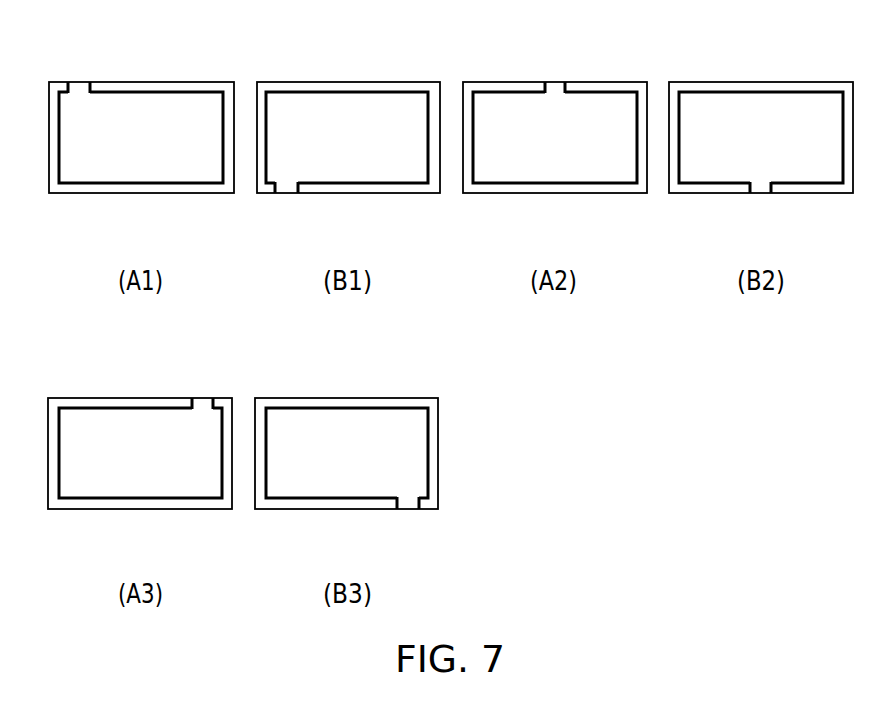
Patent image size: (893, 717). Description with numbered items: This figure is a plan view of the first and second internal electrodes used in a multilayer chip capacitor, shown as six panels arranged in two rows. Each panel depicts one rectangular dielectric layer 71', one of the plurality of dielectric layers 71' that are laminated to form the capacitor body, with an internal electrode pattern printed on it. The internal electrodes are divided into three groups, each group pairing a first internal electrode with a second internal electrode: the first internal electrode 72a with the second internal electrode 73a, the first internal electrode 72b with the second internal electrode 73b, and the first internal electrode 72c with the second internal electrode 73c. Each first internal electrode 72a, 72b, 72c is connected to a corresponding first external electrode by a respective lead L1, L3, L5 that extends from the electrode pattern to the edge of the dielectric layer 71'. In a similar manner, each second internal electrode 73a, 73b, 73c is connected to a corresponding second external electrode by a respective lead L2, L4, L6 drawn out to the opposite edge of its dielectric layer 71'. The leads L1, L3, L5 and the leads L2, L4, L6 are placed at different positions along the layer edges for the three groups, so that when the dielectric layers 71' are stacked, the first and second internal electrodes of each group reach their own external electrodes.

The dielectric layer 71' is at (450, 262).
The first internal electrode 72a is at (82, 174).
The first internal electrode 72b is at (553, 174).
The first internal electrode 72c is at (120, 489).
The second internal electrode 73a is at (370, 174).
The second internal electrode 73b is at (810, 174).
The second internal electrode 73c is at (337, 489).
The lead L1 is at (83, 82).
The lead L2 is at (287, 194).
The lead L3 is at (557, 82).
The lead L4 is at (758, 194).
The lead L5 is at (201, 398).
The lead L6 is at (410, 510).